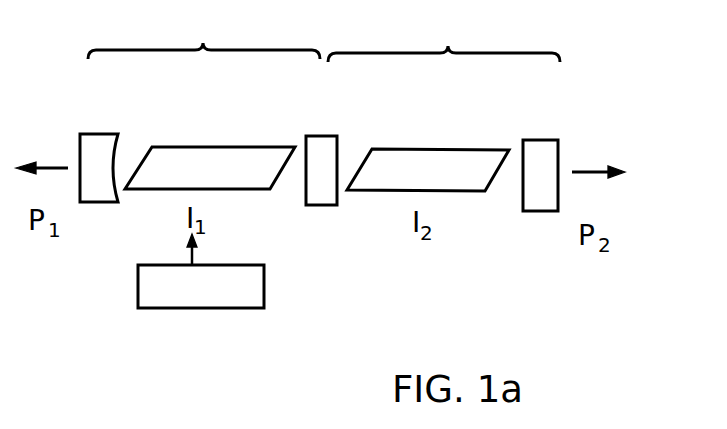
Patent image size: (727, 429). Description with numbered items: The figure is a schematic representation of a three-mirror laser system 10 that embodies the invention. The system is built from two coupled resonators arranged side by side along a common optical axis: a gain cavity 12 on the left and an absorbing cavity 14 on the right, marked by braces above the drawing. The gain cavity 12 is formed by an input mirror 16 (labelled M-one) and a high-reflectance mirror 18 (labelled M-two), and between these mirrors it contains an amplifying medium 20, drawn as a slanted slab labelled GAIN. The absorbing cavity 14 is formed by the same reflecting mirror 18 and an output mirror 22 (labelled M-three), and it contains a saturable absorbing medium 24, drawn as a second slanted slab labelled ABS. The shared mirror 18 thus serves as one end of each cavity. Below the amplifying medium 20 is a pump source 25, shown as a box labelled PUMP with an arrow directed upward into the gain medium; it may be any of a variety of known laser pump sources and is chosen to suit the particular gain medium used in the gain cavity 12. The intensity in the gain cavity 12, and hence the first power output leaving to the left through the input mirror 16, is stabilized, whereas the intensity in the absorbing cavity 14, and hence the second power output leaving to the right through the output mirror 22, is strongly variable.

The three-mirror laser system 10 is at (43, 298).
The gain cavity 12 is at (204, 33).
The absorbing cavity 14 is at (444, 37).
The input mirror 16 is at (97, 203).
The high-reflectance mirror 18 is at (318, 206).
The amplifying medium 20 is at (234, 193).
The output mirror 22 is at (537, 212).
The saturable absorbing medium 24 is at (452, 193).
The pump source 25 is at (218, 308).